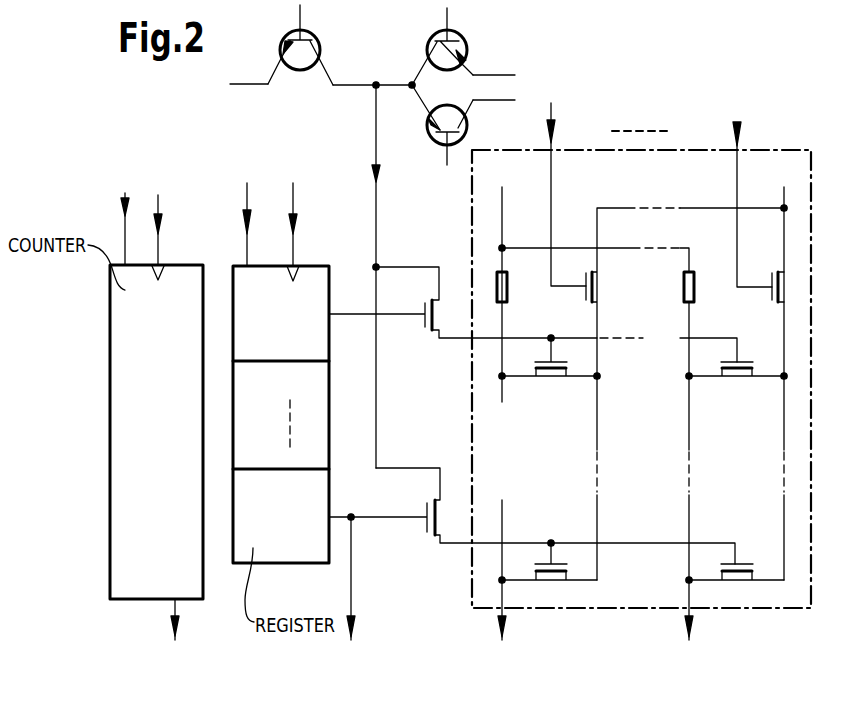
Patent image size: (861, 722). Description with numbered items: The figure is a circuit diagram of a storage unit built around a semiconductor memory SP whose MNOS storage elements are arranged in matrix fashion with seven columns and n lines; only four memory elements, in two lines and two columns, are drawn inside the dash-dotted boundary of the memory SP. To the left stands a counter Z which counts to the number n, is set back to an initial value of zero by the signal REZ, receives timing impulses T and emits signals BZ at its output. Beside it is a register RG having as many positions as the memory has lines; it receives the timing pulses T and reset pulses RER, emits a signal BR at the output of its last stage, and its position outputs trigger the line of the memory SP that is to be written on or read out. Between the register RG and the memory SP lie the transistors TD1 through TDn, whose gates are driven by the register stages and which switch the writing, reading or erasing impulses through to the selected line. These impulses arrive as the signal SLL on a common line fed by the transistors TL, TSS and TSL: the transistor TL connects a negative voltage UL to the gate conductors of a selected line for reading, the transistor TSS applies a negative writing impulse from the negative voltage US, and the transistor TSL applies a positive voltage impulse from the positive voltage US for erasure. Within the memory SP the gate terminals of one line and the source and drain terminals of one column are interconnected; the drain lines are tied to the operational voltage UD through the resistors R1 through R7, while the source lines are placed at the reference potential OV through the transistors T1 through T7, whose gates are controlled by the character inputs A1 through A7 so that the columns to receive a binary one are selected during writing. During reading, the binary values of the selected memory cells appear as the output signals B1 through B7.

The transistor TL is at (312, 42).
The negative voltage UL is at (227, 86).
The transistor TSS is at (460, 38).
The transistor TSL is at (430, 119).
The voltage US is at (510, 85).
The signal SLL is at (394, 276).
The counter Z is at (156, 432).
The reset signal REZ is at (119, 212).
The timing impulses T is at (236, 224).
The counter output signals BZ is at (191, 621).
The register RG is at (280, 565).
The reset pulses RER is at (266, 224).
The register output signal BR is at (366, 580).
The transistor TD1 is at (463, 302).
The transistor TDn is at (532, 516).
The memory SP is at (470, 577).
The input signal A1 is at (566, 191).
The input signal A7 is at (736, 191).
The operational voltage UD is at (500, 368).
The reference potential OV is at (737, 368).
The resistor R1 is at (588, 277).
The resistor R7 is at (675, 414).
The transistor T1 is at (633, 394).
The transistor T7 is at (788, 289).
The output signal B1 is at (517, 612).
The output signal B7 is at (705, 612).